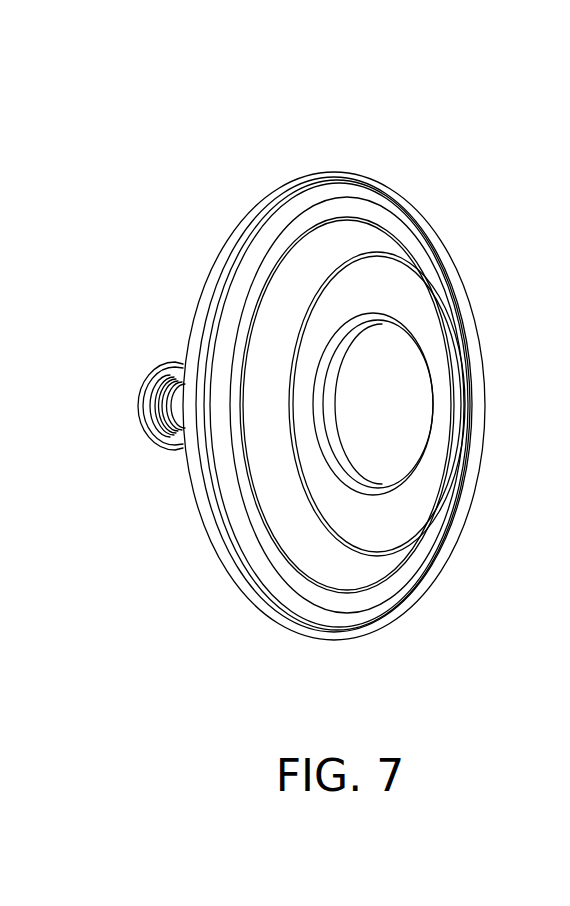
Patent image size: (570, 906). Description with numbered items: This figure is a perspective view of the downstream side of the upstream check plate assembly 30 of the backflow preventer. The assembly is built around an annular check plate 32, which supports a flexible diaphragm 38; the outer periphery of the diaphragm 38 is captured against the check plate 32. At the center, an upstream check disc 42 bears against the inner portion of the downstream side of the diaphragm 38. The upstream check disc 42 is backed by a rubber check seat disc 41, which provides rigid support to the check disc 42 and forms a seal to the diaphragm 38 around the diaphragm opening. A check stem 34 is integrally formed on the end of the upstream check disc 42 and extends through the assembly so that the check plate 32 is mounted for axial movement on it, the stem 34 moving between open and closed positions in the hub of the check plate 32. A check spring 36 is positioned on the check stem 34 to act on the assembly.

The upstream check plate assembly 30 is at (492, 92).
The annular check plate 32 is at (205, 478).
The check stem 34 is at (143, 403).
The check spring 36 is at (178, 363).
The flexible diaphragm 38 is at (355, 240).
The rubber check seat disc 41 is at (345, 500).
The upstream check disc 42 is at (395, 370).